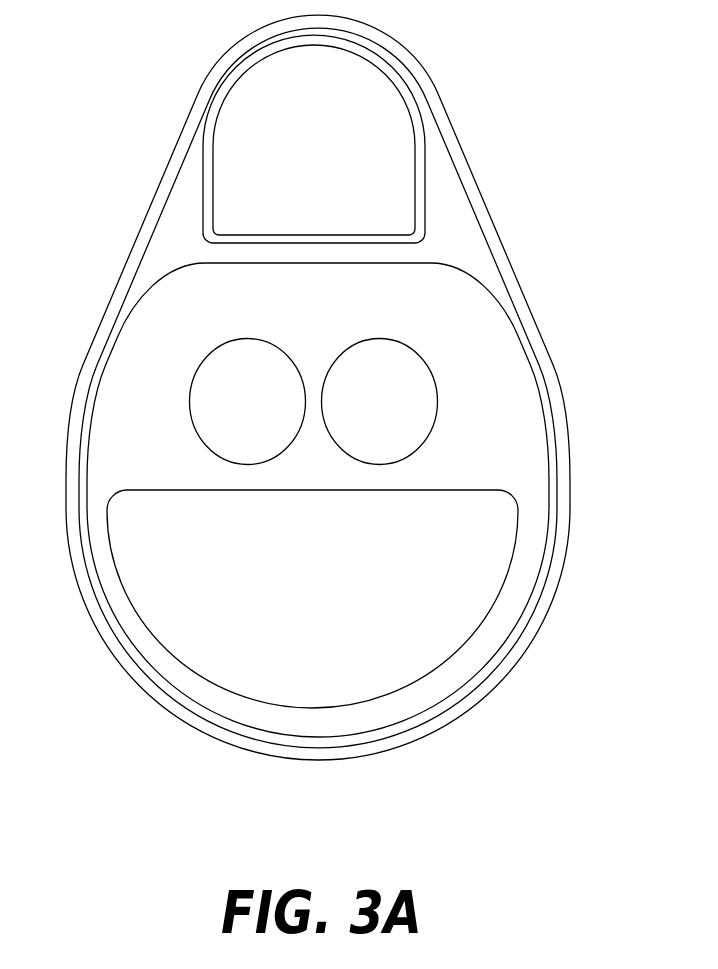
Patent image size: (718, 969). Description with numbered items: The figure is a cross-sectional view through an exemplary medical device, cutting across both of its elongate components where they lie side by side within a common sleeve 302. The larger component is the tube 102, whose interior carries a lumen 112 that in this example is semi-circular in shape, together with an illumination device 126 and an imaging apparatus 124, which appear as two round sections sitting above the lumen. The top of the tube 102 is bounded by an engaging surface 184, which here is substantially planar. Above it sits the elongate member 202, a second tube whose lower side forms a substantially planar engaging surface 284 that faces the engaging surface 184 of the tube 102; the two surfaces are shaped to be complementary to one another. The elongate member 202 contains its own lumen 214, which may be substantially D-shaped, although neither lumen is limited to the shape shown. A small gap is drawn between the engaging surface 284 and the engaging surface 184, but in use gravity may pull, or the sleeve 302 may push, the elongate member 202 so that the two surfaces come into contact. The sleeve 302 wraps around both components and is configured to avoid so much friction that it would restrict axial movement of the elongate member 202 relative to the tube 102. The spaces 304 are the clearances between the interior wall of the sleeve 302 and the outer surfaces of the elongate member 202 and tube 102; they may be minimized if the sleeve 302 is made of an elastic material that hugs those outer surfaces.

The tube 102 is at (532, 462).
The lumen 112 is at (397, 657).
The imaging apparatus 124 is at (413, 427).
The illumination device 126 is at (208, 427).
The engaging surface 184 is at (403, 263).
The elongate member 202 is at (423, 166).
The lumen 214 is at (365, 90).
The engaging surface 284 is at (232, 242).
The sleeve 302 is at (572, 450).
The spaces 304 is at (163, 243).